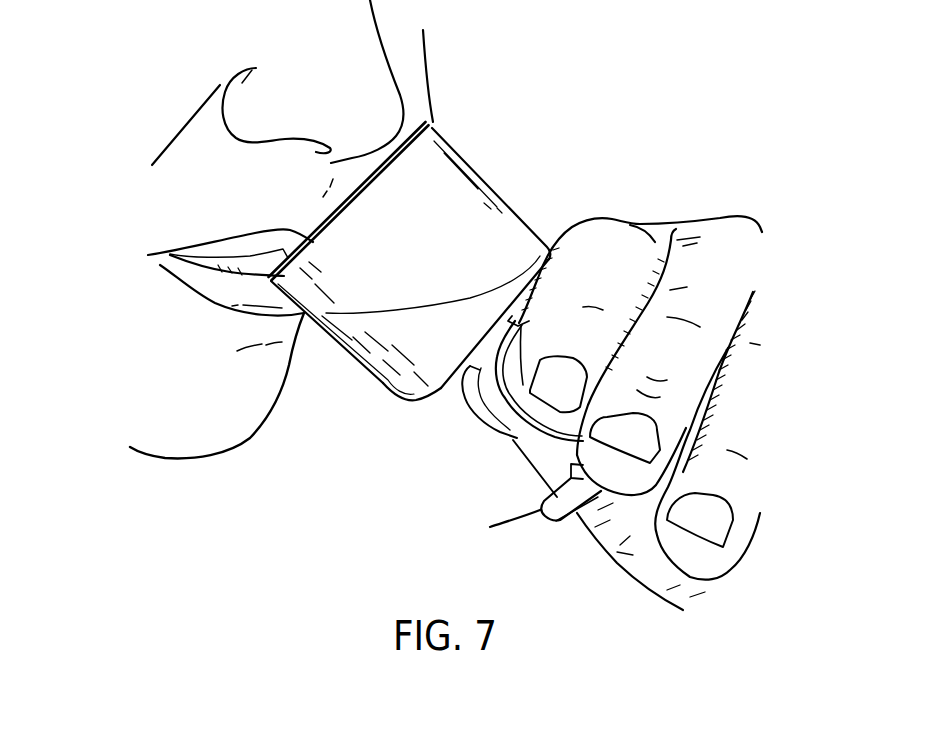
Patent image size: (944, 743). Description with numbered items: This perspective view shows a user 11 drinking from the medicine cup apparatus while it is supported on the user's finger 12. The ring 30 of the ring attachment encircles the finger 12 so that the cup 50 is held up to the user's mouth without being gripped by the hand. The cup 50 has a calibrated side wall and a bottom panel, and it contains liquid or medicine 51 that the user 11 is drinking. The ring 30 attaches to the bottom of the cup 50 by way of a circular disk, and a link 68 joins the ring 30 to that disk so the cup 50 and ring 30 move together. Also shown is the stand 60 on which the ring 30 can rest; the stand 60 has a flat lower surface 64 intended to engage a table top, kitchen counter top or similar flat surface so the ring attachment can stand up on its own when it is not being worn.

The user 11 is at (107, 509).
The finger 12 is at (578, 397).
The ring 30 is at (517, 437).
The cup 50 is at (431, 267).
The liquid or medicine 51 is at (403, 342).
The stand 60 is at (543, 508).
The flat lower surface 64 is at (581, 549).
The link 68 is at (441, 388).